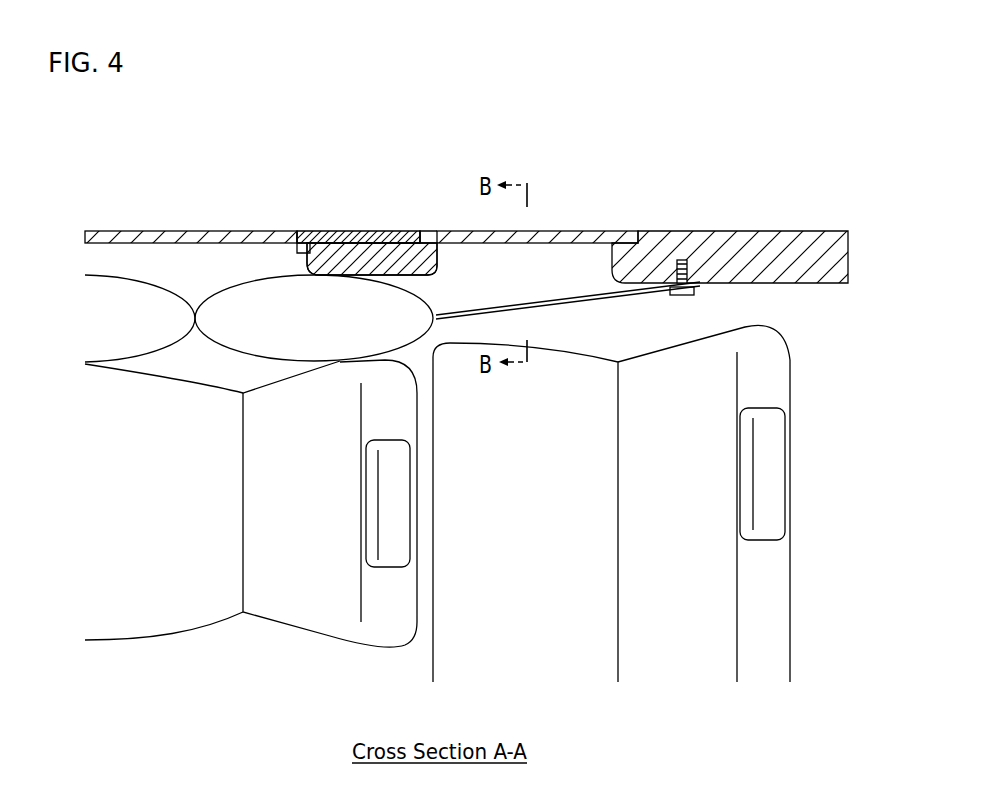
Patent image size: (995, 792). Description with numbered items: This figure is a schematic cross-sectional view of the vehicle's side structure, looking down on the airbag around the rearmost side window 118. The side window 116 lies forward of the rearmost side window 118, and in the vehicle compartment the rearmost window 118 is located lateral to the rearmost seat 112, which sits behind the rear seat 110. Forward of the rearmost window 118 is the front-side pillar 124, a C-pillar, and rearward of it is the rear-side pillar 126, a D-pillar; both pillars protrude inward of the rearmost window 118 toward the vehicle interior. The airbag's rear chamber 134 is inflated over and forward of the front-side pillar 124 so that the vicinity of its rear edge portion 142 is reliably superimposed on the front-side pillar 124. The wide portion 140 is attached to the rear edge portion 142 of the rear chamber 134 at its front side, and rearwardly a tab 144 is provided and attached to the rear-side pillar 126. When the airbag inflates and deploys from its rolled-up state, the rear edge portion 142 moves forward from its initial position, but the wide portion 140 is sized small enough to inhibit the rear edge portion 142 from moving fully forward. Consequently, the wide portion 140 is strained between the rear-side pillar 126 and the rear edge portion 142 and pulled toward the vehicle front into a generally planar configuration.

The rear seat 110 is at (313, 617).
The rearmost seat 112 is at (715, 668).
The side window 116 is at (178, 232).
The rearmost side window 118 is at (590, 238).
The front-side pillar 124 is at (388, 243).
The rear-side pillar 126 is at (806, 238).
The rear chamber 134 is at (227, 338).
The wide portion 140 is at (582, 293).
The rear edge portion 142 is at (440, 314).
The tab 144 is at (697, 284).